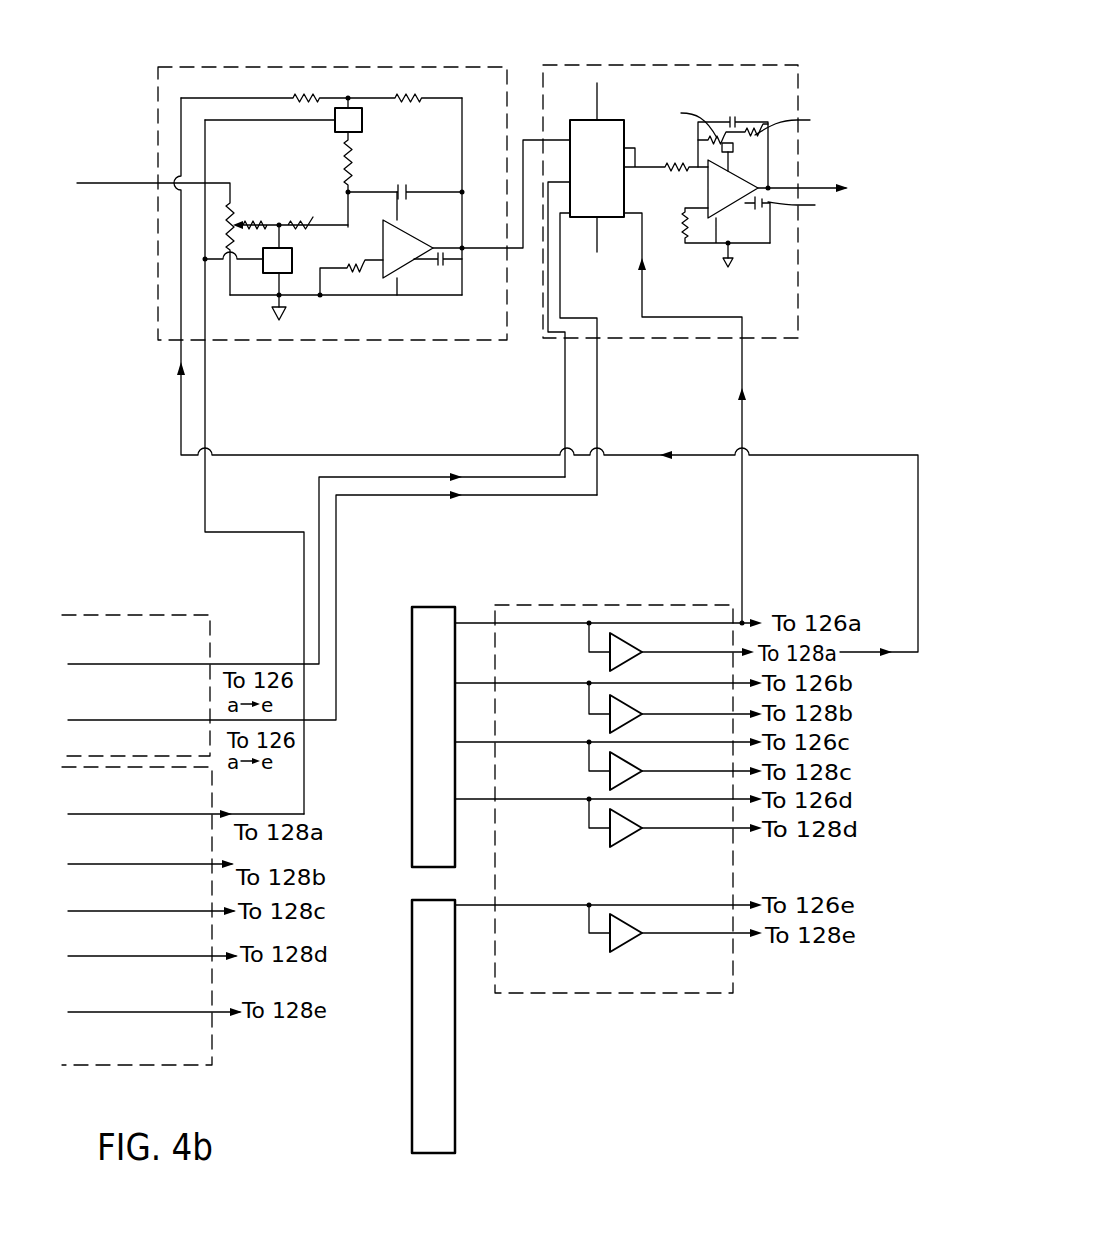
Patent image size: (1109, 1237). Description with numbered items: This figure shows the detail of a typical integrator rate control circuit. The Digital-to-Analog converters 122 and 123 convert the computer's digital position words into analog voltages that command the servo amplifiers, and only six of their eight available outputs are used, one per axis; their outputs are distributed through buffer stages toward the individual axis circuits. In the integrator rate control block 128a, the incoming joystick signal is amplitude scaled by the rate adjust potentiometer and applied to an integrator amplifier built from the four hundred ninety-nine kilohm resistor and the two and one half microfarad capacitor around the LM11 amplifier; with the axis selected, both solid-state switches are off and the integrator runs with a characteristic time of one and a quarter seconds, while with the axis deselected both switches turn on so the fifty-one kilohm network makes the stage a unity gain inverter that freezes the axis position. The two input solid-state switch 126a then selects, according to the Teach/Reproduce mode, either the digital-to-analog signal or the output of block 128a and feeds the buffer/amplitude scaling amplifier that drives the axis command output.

The integrator rate control block 128a is at (222, 67).
The two input solid-state switch 126a is at (627, 65).
The Digital-to-Analog converter 122 is at (412, 660).
The Digital-to-Analog converter 123 is at (412, 975).